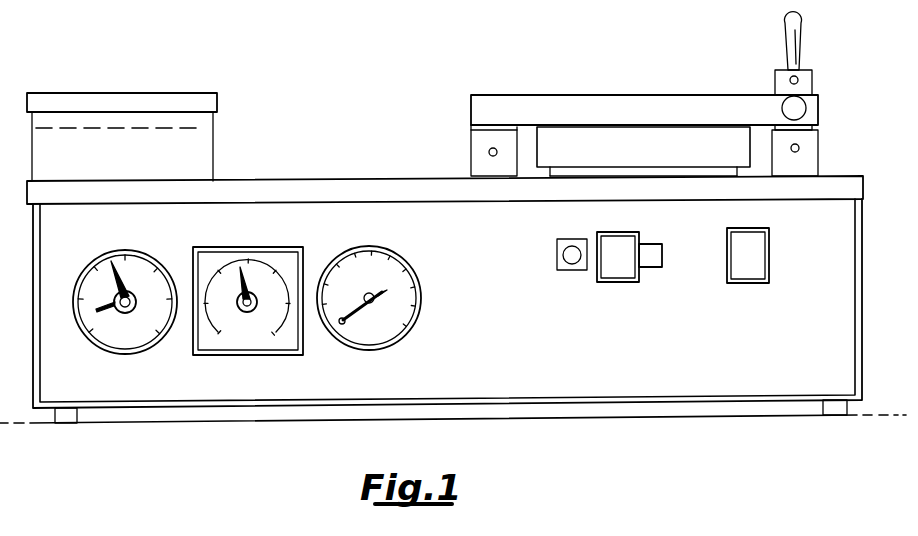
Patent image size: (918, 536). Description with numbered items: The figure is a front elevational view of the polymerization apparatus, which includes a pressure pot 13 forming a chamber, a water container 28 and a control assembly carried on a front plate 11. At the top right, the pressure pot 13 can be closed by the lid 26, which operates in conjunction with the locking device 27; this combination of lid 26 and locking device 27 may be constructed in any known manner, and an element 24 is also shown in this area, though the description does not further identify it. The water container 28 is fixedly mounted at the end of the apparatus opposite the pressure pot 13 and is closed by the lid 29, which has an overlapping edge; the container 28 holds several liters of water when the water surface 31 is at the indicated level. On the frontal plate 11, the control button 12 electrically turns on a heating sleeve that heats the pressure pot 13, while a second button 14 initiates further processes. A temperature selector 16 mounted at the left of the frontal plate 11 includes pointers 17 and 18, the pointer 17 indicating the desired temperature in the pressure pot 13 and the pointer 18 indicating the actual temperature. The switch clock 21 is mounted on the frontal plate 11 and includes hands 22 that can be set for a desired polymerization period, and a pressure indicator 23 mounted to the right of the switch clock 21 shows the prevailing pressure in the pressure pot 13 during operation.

The front plate 11 is at (758, 340).
The control button 12 is at (624, 267).
The pressure pot 13 is at (548, 167).
The second button 14 is at (572, 264).
The temperature selector 16 is at (140, 254).
The pointer 17 is at (110, 262).
The pointer 18 is at (97, 310).
The switch clock 21 is at (298, 249).
The hands 22 is at (247, 262).
The pressure indicator 23 is at (401, 258).
The support plate 24 is at (675, 170).
The lid 26 is at (655, 156).
The locking device 27 is at (625, 95).
The water container 28 is at (207, 146).
The lid 29 is at (210, 93).
The water surface 31 is at (199, 128).